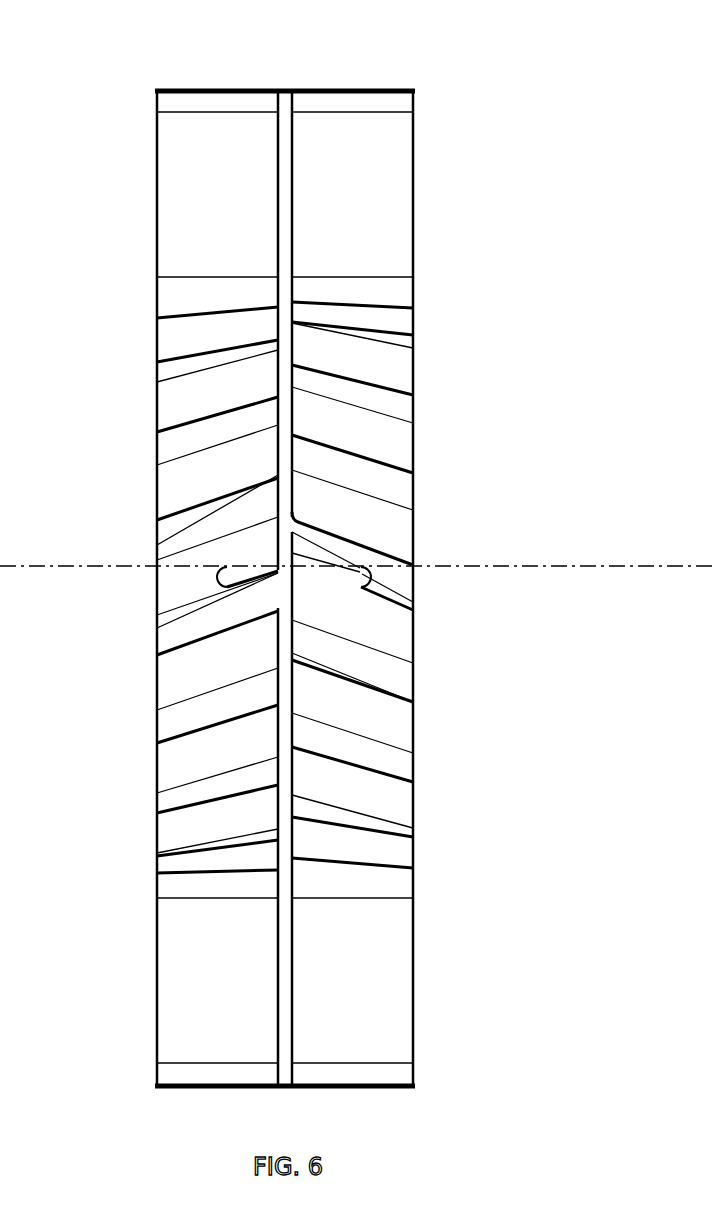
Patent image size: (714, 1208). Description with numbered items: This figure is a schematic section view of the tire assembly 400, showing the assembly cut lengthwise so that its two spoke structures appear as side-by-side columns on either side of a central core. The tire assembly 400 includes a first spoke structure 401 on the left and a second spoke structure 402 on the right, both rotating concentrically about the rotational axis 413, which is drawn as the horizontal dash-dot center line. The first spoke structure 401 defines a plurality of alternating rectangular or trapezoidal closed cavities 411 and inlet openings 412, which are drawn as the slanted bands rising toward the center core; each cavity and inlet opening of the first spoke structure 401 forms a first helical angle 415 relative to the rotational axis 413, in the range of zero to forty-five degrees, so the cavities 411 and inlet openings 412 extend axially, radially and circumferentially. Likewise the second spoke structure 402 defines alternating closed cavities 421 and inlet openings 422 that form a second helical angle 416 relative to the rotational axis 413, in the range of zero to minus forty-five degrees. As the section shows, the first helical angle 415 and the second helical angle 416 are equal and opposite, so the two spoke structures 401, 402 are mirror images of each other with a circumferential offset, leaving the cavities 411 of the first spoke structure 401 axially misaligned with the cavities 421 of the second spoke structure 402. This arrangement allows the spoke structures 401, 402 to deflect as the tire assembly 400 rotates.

The tire assembly 400 is at (357, 553).
The first spoke structure 401 is at (145, 575).
The second spoke structure 402 is at (413, 566).
The closed cavities 411 is at (185, 678).
The inlet openings 412 is at (187, 631).
The rotational axis 413 is at (540, 567).
The first helical angle 415 is at (217, 578).
The second helical angle 416 is at (365, 580).
The closed cavities 421 is at (378, 722).
The inlet openings 422 is at (370, 663).